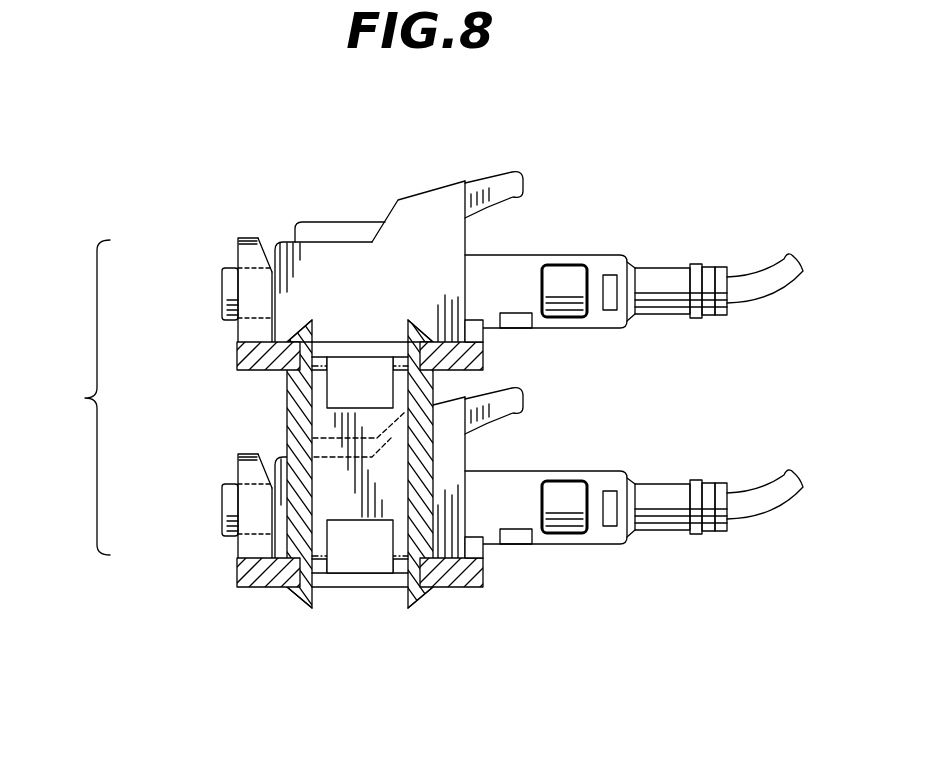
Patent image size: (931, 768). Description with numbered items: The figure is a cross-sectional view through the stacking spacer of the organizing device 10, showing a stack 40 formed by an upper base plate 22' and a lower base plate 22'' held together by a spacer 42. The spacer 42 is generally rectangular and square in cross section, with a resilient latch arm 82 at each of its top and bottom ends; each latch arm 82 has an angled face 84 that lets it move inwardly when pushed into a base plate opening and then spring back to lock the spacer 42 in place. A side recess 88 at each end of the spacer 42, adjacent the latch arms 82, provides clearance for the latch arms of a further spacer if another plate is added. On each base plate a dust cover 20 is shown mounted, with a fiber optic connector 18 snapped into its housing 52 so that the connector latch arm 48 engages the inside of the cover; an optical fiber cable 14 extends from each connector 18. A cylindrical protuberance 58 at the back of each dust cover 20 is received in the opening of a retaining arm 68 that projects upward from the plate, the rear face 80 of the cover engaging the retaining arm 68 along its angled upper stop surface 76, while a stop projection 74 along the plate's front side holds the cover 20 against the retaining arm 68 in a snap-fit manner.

The organizing device 10 is at (228, 356).
The optical fiber cable 14 is at (800, 267).
The fiber optic connector 18 is at (606, 258).
The dust cover 20 is at (408, 202).
The upper base plate 22' is at (393, 356).
The lower base plate 22'' is at (400, 592).
The stack 40 is at (69, 397).
The spacer 42 is at (280, 397).
The latch arm 48 is at (514, 173).
The dust cover housing 52 is at (435, 200).
The cylindrical protuberance 58 is at (220, 292).
The retaining arm 68 is at (245, 237).
The stop projection 74 is at (484, 552).
The upper stop surface 76 is at (262, 247).
The rear face 80 is at (268, 247).
The resilient latch arm 82 is at (317, 323).
The angled face 84 is at (423, 318).
The side recess 88 is at (377, 387).